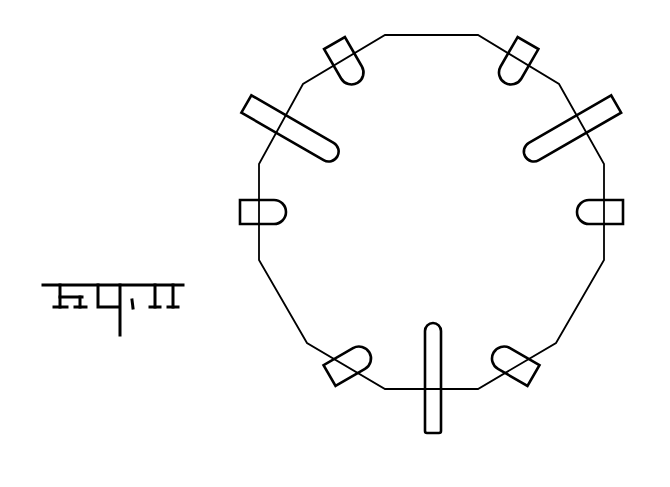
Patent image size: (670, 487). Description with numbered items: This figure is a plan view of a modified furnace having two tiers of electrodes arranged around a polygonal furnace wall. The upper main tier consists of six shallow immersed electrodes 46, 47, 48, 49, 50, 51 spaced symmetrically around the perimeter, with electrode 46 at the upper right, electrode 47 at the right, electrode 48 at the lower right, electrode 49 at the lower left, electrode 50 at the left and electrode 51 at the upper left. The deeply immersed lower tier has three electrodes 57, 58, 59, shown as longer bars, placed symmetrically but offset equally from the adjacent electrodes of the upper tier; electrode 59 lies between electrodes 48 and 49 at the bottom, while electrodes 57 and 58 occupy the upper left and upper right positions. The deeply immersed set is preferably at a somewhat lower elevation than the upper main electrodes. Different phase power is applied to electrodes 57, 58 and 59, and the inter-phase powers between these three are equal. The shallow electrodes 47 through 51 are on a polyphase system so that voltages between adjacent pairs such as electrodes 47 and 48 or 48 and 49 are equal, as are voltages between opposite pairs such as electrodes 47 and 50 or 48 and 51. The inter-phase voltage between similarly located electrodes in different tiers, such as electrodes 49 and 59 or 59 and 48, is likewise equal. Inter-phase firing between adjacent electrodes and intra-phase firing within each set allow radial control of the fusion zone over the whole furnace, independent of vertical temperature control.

The electrode 46 is at (518, 80).
The electrode 47 is at (583, 214).
The electrode 48 is at (520, 340).
The electrode 49 is at (357, 362).
The electrode 50 is at (288, 212).
The electrode 51 is at (366, 70).
The deeply immersed electrode 57 is at (333, 143).
The deeply immersed electrode 58 is at (525, 148).
The deeply immersed electrode 59 is at (442, 343).